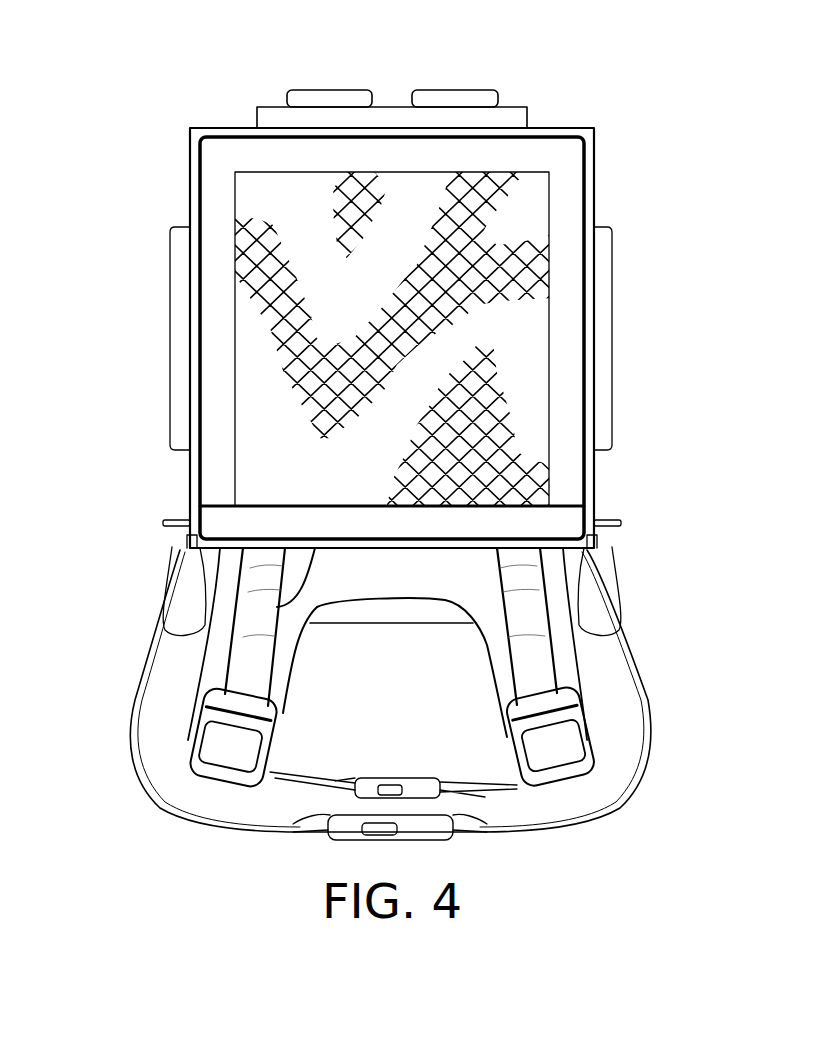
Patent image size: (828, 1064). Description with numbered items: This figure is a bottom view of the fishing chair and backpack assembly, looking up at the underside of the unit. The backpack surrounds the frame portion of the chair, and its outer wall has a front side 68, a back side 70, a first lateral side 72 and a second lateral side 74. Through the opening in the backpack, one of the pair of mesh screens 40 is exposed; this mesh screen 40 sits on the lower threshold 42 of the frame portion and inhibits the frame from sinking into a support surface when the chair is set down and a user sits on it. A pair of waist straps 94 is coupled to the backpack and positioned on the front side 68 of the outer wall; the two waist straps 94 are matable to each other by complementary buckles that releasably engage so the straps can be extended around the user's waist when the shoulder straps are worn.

The back side 70 is at (215, 128).
The second lateral side 74 is at (190, 181).
The mesh screen 40 is at (277, 313).
The lower threshold 42 is at (198, 470).
The first lateral side 72 is at (594, 424).
The front side 68 is at (277, 607).
The waist strap 94 is at (248, 831).